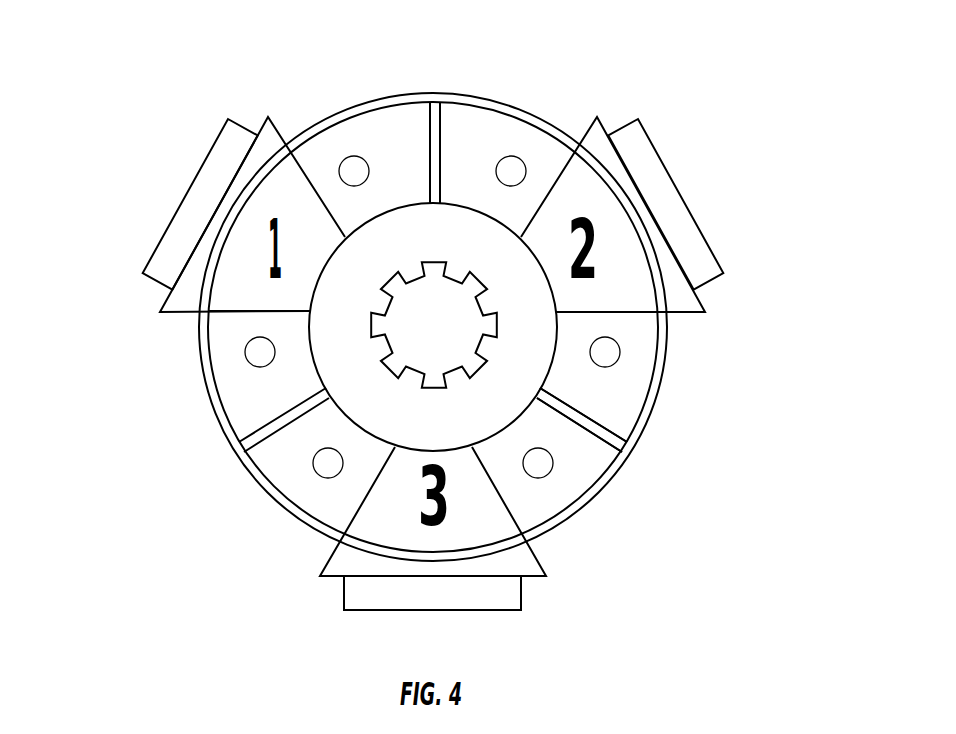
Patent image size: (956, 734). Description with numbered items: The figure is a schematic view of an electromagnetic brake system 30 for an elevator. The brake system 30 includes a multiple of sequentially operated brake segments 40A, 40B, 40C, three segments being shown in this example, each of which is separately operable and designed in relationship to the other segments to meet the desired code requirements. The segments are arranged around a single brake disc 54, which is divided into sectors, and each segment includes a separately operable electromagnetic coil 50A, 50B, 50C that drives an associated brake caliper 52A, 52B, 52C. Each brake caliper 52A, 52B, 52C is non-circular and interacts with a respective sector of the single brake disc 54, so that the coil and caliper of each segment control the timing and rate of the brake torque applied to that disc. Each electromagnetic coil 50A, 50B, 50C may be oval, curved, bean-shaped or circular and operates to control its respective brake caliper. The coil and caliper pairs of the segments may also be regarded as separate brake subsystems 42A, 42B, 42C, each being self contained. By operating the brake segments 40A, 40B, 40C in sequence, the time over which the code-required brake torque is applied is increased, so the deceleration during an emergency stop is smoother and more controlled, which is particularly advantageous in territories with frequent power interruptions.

The brake system 30 is at (691, 108).
The brake segment 40A is at (296, 69).
The brake segment 40B is at (568, 75).
The brake segment 40C is at (577, 554).
The brake subsystem 42A is at (177, 175).
The brake subsystem 42B is at (710, 214).
The brake subsystem 42C is at (423, 566).
The electromagnetic coil 50A is at (175, 237).
The electromagnetic coil 50B is at (767, 123).
The electromagnetic coil 50C is at (402, 600).
The brake caliper 52A is at (260, 128).
The brake caliper 52B is at (665, 235).
The brake caliper 52C is at (485, 563).
The brake disc 54 is at (605, 435).